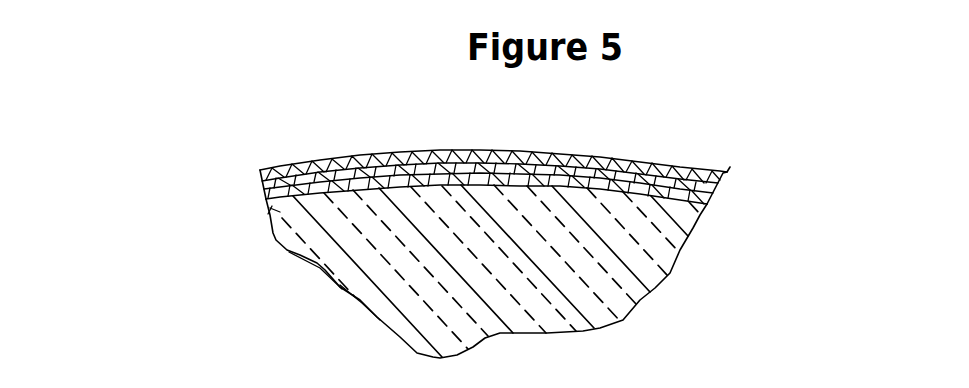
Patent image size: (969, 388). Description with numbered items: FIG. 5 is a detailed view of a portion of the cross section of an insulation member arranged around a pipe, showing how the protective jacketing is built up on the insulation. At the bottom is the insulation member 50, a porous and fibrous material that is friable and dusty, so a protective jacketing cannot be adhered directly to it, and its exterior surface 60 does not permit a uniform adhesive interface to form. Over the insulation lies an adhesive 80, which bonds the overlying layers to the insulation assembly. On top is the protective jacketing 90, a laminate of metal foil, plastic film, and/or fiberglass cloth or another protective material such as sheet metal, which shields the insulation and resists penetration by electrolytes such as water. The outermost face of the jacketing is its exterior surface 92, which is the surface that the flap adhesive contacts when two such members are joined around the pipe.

The insulation member 50 is at (273, 212).
The exterior surface of the insulation 60 is at (262, 188).
The adhesive 80 is at (262, 188).
The protective jacketing 90 is at (310, 166).
The exterior surface of the protective jacketing 92 is at (350, 153).